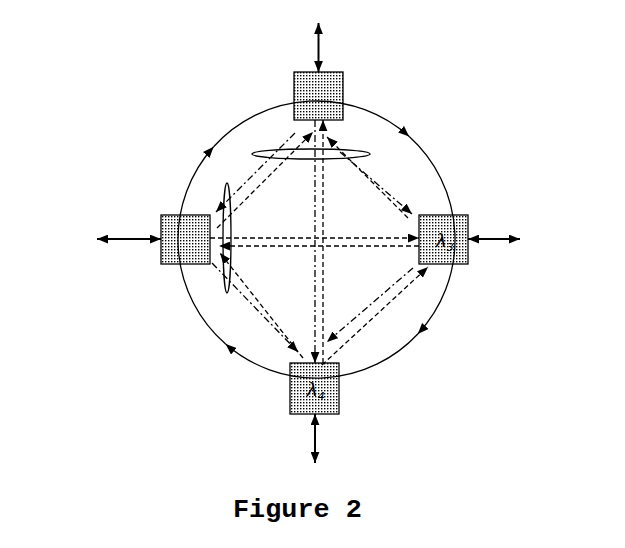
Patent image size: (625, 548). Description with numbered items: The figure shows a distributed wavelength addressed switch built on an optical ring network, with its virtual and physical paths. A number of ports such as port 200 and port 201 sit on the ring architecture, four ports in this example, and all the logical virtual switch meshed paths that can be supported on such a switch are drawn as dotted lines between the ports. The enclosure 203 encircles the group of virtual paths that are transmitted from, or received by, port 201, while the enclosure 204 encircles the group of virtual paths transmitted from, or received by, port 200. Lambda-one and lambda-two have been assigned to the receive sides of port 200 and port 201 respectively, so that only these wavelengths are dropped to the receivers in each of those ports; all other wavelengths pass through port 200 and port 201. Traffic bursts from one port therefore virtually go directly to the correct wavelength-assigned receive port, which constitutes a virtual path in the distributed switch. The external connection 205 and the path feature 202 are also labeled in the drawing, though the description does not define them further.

The port 200 is at (161, 223).
The port 201 is at (344, 84).
The optical beam path 202 is at (224, 279).
The group of virtual paths 203 is at (257, 156).
The group of virtual paths 204 is at (228, 184).
The external optical input/output 205 is at (493, 236).